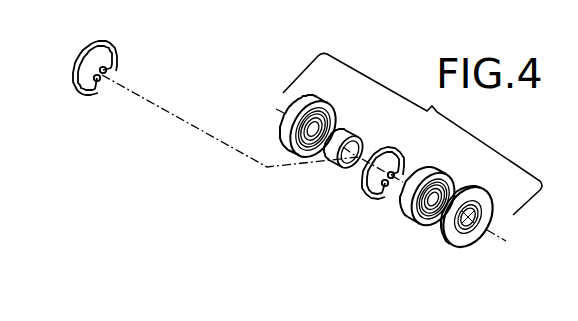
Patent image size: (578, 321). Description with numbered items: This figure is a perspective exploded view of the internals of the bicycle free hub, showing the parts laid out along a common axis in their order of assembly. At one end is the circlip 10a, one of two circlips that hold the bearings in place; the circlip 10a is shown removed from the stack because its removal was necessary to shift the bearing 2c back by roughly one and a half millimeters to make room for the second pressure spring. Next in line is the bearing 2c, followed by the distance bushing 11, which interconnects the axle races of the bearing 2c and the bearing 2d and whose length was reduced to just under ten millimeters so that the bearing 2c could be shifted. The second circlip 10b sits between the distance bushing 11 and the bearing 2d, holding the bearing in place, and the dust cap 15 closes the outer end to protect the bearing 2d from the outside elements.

The circlip 10a is at (78, 95).
The bearing 2c is at (282, 124).
The distance bushing 11 is at (338, 163).
The circlip 10b is at (370, 190).
The bearing 2d is at (404, 219).
The dust cap 15 is at (452, 246).